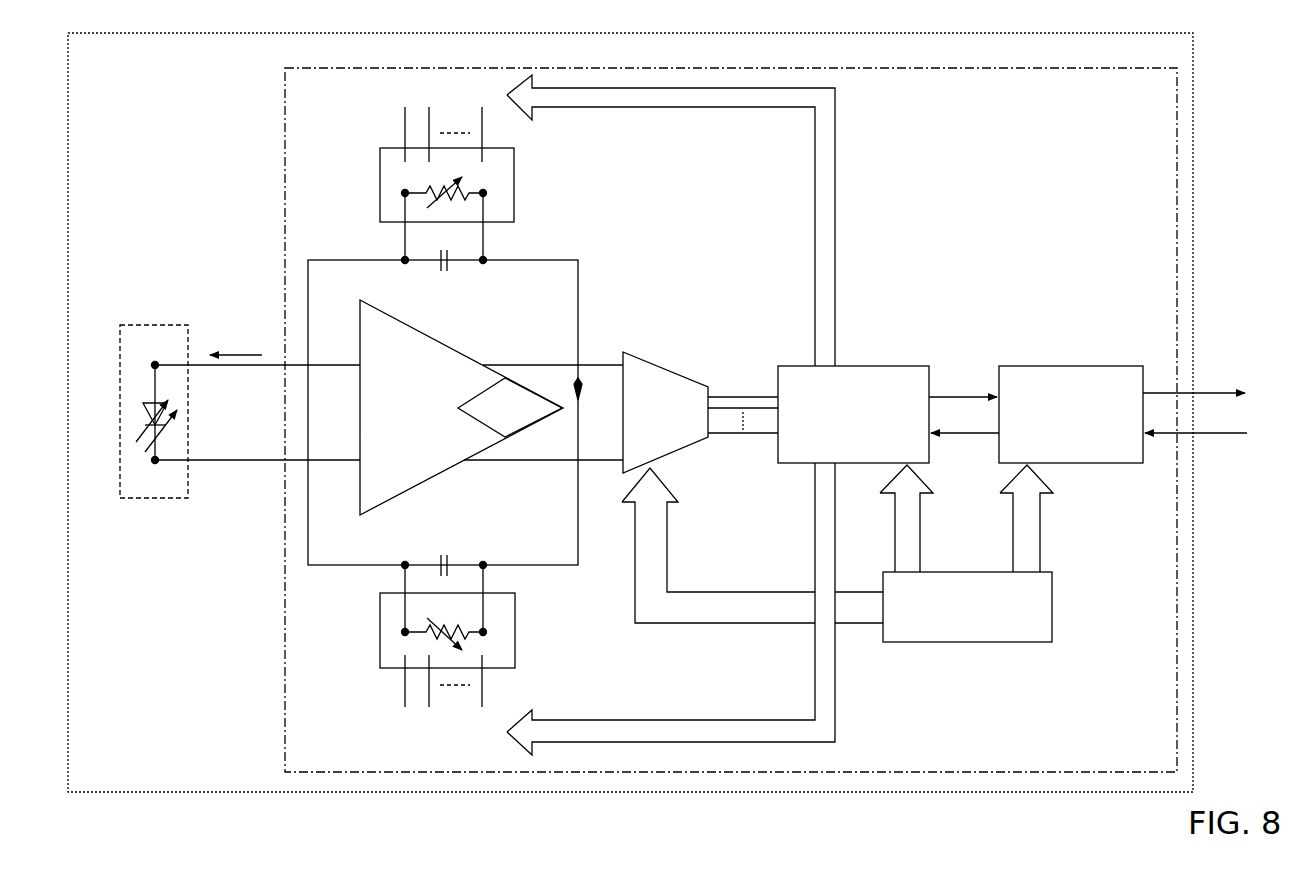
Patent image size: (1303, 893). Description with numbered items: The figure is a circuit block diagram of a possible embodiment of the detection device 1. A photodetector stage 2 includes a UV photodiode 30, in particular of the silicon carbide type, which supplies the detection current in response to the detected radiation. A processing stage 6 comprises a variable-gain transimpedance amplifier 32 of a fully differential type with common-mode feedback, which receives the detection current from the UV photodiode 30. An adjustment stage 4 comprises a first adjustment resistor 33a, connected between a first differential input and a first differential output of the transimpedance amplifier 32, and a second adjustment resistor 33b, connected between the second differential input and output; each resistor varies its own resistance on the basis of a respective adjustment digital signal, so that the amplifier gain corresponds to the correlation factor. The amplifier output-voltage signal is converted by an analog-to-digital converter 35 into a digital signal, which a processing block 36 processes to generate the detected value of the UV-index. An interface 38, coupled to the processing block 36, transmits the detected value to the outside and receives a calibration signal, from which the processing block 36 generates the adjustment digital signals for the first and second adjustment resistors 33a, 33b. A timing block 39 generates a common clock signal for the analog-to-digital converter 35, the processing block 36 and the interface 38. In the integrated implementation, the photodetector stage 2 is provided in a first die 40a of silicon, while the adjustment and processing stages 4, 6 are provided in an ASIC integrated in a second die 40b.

The detection device 1 is at (1235, 76).
The photodetector stage 2 is at (133, 333).
The adjustment stage 4 is at (352, 232).
The processing stage 6 is at (926, 332).
The UV photodiode 30 is at (150, 420).
The transimpedance amplifier 32 is at (420, 350).
The first adjustment resistor 33a is at (497, 174).
The second adjustment resistor 33b is at (505, 646).
The analog-to-digital converter 35 is at (660, 382).
The processing block 36 is at (888, 375).
The interface 38 is at (1092, 375).
The timing block 39 is at (1020, 630).
The first die 40a is at (192, 488).
The second die 40b is at (283, 730).